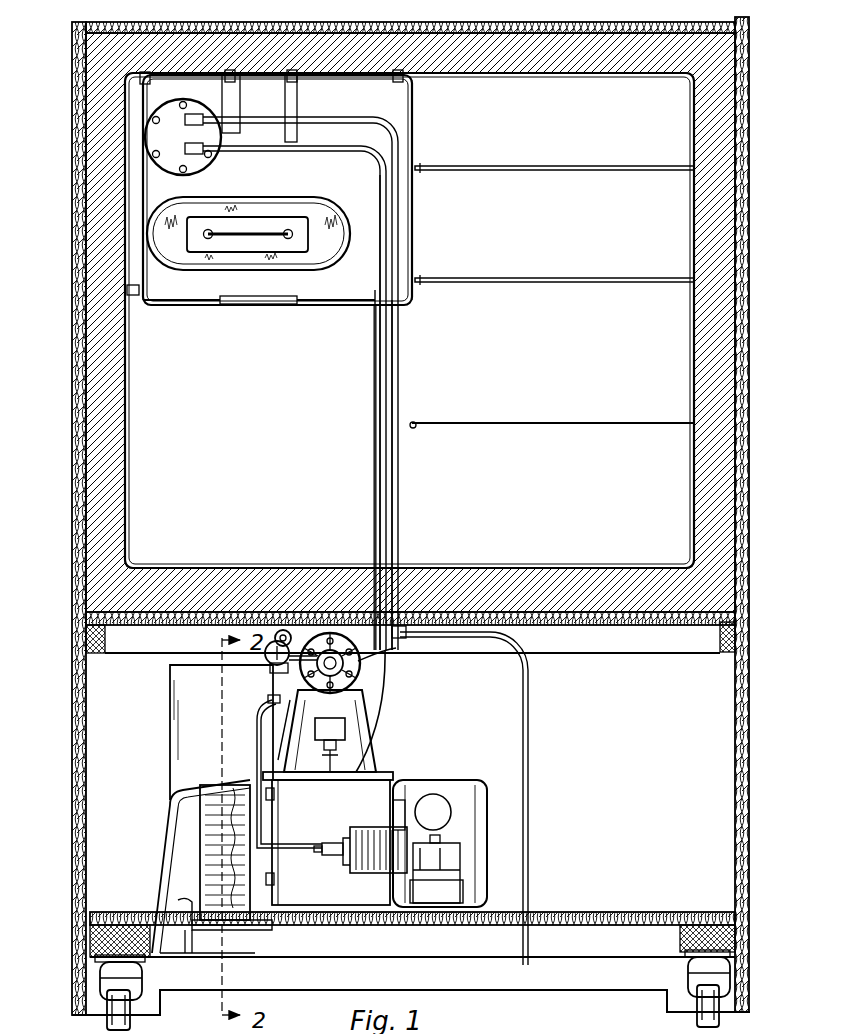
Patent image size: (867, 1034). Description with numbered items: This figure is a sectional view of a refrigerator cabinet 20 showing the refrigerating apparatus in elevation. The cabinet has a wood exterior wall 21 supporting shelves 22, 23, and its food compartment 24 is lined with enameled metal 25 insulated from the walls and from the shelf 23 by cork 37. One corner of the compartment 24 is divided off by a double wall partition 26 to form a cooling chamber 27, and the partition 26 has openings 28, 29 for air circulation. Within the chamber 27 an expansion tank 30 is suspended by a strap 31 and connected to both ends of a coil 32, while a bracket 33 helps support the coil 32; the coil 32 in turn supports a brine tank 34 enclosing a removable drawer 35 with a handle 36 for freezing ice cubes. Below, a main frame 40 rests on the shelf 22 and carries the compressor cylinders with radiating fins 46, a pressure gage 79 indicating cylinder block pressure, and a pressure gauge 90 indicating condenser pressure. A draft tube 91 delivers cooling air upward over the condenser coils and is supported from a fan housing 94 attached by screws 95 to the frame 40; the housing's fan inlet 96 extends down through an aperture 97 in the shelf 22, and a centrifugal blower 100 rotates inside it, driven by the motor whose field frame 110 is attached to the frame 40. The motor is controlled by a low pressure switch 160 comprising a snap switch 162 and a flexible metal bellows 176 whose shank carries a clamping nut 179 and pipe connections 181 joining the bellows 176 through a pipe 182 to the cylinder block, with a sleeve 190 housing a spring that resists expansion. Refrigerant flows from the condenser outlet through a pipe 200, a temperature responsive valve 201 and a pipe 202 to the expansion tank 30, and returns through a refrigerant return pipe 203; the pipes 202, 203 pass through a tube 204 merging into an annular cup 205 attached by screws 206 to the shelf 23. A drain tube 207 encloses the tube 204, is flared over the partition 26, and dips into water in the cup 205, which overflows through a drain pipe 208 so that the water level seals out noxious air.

The refrigerator cabinet 20 is at (750, 802).
The wood exterior wall 21 is at (135, 22).
The shelf 22 is at (586, 914).
The shelf 23 is at (636, 628).
The food compartment 24 is at (647, 136).
The enameled metal lining 25 is at (567, 84).
The double wall partition 26 is at (413, 208).
The cooling chamber 27 is at (137, 171).
The opening 28 is at (262, 304).
The opening 29 is at (413, 112).
The expansion tank 30 is at (198, 153).
The strap 31 is at (229, 110).
The coil 32 is at (280, 198).
The bracket 33 is at (297, 106).
The brine tank 34 is at (328, 222).
The removable drawer 35 is at (292, 246).
The handle 36 is at (216, 238).
The cork insulation 37 is at (99, 349).
The main frame 40 is at (360, 794).
The radiating fins 46 is at (362, 665).
The pressure gage 79 is at (268, 648).
The pressure gauge 90 is at (275, 662).
The draft tube 91 is at (170, 742).
The fan housing 94 is at (244, 929).
The screws 95 is at (278, 803).
The fan inlet 96 is at (183, 955).
The aperture 97 is at (195, 954).
The blower 100 is at (206, 862).
The field frame 110 is at (450, 786).
The low pressure switch 160 is at (433, 812).
The snap switch 162 is at (456, 900).
The flexible metal bellows 176 is at (372, 871).
The clamping nut 179 is at (344, 828).
The pipe connections 181 is at (347, 843).
The pipe 182 is at (257, 756).
The sleeve 190 is at (460, 846).
The pipe 200 is at (270, 741).
The temperature responsive valve 201 is at (346, 709).
The pipe 202 is at (368, 148).
The refrigerant return pipe 203 is at (374, 110).
The tube 204 is at (396, 287).
The annular cup 205 is at (415, 650).
The screws 206 is at (329, 304).
The drain tube 207 is at (400, 364).
The drain pipe 208 is at (373, 296).